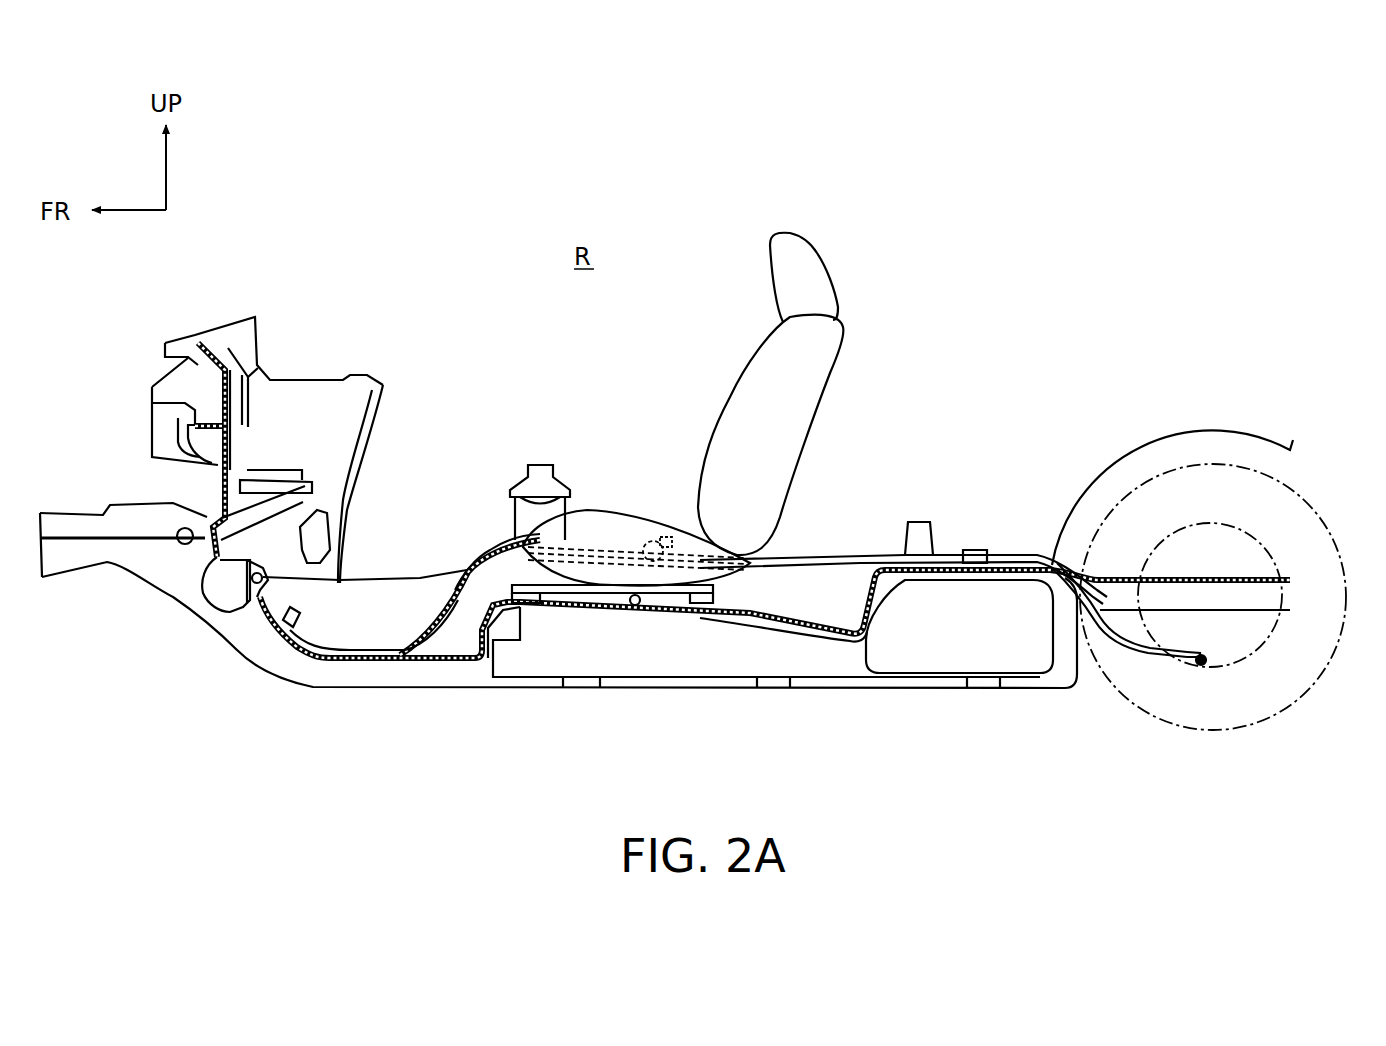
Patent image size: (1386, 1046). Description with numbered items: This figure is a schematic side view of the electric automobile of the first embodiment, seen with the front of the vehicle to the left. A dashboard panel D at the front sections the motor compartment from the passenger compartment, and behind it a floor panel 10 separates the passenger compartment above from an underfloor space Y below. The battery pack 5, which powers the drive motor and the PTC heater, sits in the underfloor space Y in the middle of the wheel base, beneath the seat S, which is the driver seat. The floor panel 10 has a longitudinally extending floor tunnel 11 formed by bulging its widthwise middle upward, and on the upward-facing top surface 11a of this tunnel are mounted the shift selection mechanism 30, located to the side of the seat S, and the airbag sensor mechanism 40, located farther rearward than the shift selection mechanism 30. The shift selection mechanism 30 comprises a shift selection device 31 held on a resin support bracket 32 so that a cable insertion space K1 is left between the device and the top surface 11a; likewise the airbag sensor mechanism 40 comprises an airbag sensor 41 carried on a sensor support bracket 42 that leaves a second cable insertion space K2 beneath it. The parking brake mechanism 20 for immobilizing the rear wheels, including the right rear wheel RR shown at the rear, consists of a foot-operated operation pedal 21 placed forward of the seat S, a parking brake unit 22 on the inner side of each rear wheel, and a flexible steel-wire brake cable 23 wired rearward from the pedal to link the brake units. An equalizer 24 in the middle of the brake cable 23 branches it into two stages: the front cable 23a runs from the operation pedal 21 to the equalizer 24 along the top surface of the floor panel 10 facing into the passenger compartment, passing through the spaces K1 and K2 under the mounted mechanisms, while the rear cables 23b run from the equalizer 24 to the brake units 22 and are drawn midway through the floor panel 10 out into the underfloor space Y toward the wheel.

The dashboard panel D is at (220, 458).
The seat S is at (715, 394).
The battery pack 5 is at (848, 658).
The floor panel 10 is at (660, 603).
The floor tunnel 11 is at (455, 580).
The top surface of the floor tunnel 11a is at (360, 578).
The parking brake mechanism 20 is at (409, 622).
The operation pedal 21 is at (305, 599).
The parking brake unit 22 is at (1227, 650).
The parking brake cable 23 is at (452, 638).
The front cable 23a is at (380, 662).
The rear cable 23b is at (1110, 563).
The equalizer 24 is at (972, 548).
The shift selection mechanism 30 is at (562, 446).
The shift selection device 31 is at (533, 463).
The support bracket 32 is at (560, 525).
The airbag sensor mechanism 40 is at (623, 520).
The airbag sensor 41 is at (650, 538).
The sensor support bracket 42 is at (673, 545).
The cable insertion space K1 is at (560, 535).
The second cable insertion space K2 is at (653, 577).
The underfloor space Y is at (1077, 617).
The right rear wheel RR is at (1273, 687).